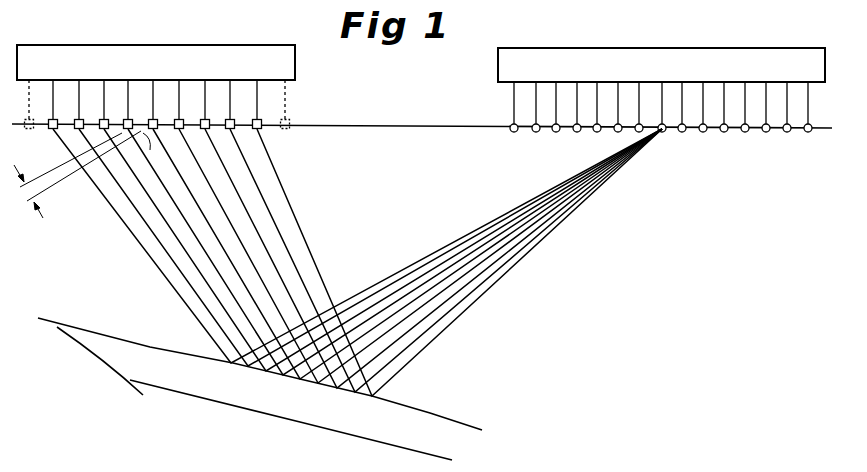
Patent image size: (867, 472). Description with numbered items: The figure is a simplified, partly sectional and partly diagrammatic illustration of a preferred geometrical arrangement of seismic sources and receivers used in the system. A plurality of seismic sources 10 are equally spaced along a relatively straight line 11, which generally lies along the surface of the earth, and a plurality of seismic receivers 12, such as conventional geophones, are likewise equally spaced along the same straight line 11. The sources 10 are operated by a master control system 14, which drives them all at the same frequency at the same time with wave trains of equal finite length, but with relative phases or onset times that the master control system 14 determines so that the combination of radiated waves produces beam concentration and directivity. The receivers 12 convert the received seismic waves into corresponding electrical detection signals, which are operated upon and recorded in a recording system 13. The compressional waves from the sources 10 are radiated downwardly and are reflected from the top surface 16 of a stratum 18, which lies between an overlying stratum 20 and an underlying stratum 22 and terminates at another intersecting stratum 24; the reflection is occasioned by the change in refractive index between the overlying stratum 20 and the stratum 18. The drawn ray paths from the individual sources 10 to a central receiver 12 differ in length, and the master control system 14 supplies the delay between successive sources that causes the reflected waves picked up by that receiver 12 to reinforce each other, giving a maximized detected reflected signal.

The seismic sources 10 is at (290, 135).
The straight line 11 is at (378, 127).
The seismic receivers 12 is at (556, 140).
The recording system 13 is at (676, 48).
The master control system 14 is at (225, 45).
The top surface 16 is at (374, 396).
The stratum 18 is at (410, 428).
The overlying stratum 20 is at (469, 391).
The underlying stratum 22 is at (372, 464).
The intersecting stratum 24 is at (77, 378).